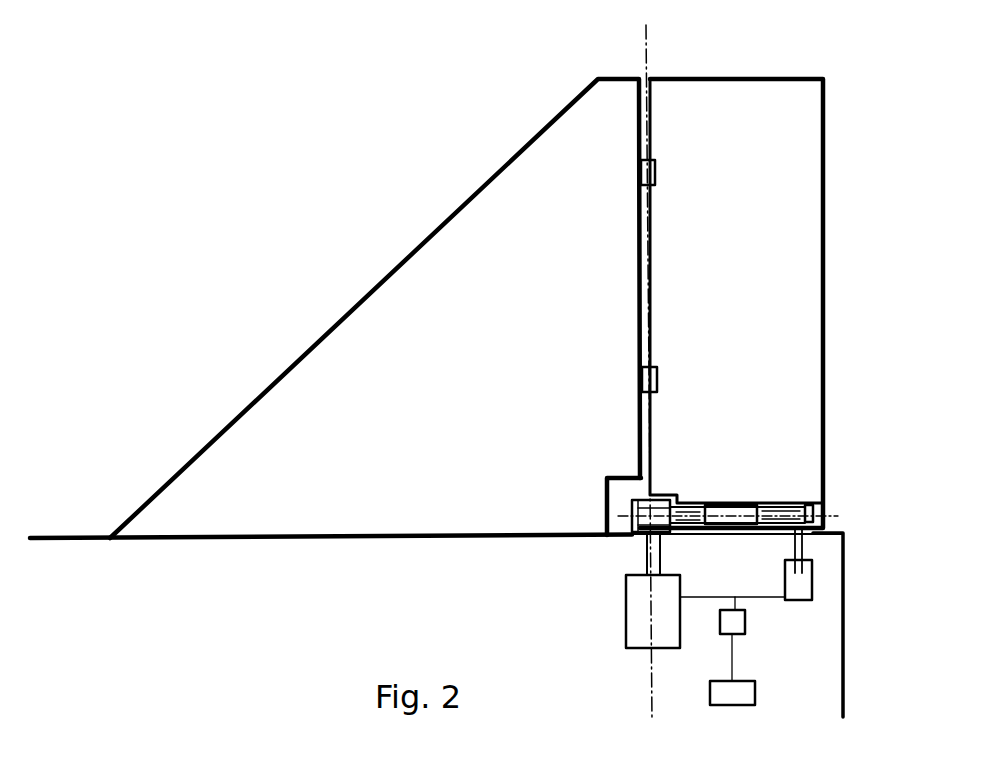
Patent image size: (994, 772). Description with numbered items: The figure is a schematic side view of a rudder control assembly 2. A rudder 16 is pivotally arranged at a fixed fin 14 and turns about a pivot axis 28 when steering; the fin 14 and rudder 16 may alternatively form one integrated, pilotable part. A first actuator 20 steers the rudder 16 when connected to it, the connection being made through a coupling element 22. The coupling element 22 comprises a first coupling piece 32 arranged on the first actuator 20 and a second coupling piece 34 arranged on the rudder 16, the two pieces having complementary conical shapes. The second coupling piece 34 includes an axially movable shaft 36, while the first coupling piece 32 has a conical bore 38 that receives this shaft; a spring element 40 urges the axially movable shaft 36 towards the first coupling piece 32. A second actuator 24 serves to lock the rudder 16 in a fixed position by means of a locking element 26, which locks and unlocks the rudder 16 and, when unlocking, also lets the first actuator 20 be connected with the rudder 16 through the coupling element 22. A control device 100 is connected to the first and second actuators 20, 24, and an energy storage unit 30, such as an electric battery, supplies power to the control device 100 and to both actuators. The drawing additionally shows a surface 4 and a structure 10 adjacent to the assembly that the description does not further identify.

The rudder control assembly 2 is at (846, 519).
The ground 4 is at (73, 537).
The wall 10 is at (845, 665).
The fin 14 is at (387, 277).
The rudder 16 is at (823, 305).
The first actuator 20 is at (626, 610).
The coupling element 22 is at (588, 492).
The second actuator 24 is at (812, 600).
The locking element 26 is at (803, 543).
The pivot axis 28 is at (646, 57).
The energy storage unit 30 is at (755, 692).
The first coupling piece 32 is at (632, 536).
The second coupling piece 34 is at (750, 470).
The axially movable shaft 36 is at (687, 505).
The conical bore 38 is at (640, 503).
The spring element 40 is at (738, 502).
The control device 100 is at (725, 635).